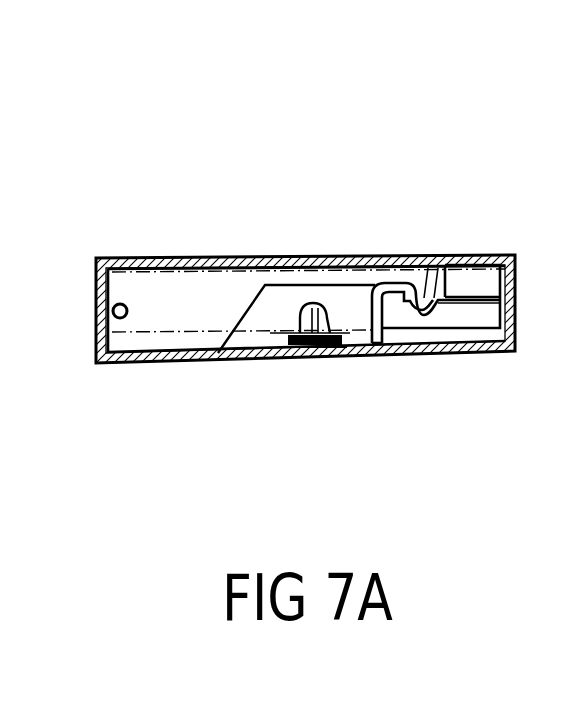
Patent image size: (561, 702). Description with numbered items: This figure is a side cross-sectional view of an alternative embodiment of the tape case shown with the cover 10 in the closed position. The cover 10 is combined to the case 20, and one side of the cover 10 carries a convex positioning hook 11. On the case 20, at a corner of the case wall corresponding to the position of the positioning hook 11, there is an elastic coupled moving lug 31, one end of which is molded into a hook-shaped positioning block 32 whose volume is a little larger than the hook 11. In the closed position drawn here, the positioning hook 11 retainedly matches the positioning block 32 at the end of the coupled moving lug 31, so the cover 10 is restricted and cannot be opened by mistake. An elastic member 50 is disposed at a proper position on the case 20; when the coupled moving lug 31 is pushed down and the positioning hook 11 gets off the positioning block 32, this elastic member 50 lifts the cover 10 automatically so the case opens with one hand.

The cover 10 is at (378, 256).
The positioning hook 11 is at (434, 298).
The case 20 is at (338, 358).
The coupled moving lug 31 is at (480, 313).
The positioning block 32 is at (385, 358).
The elastic member 50 is at (281, 356).